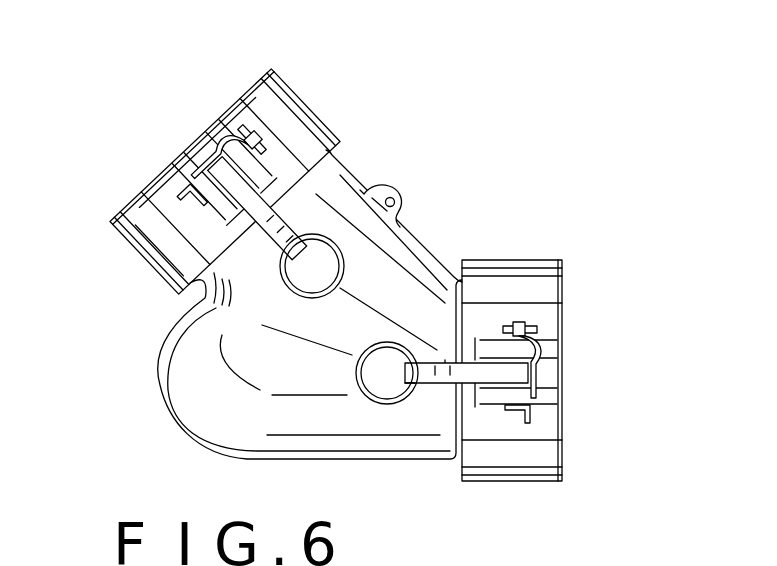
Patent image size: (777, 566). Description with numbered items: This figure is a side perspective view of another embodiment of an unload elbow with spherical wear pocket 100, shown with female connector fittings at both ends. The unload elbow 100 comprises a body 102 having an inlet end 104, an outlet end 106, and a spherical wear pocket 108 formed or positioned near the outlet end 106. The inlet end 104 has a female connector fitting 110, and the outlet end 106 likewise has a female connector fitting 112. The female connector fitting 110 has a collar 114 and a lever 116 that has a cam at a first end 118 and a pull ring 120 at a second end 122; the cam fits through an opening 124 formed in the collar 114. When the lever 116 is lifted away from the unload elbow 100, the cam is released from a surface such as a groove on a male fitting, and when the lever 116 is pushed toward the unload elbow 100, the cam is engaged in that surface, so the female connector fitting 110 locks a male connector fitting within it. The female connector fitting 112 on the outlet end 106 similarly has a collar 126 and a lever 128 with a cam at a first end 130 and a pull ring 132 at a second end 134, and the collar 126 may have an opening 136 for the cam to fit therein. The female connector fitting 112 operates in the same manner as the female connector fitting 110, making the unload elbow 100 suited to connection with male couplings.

The unload elbow with spherical wear pocket 100 is at (376, 134).
The body 102 is at (414, 232).
The inlet end 104 is at (606, 312).
The outlet end 106 is at (179, 110).
The spherical wear pocket 108 is at (166, 407).
The female connector fitting 110 is at (527, 260).
The female connector fitting 112 is at (303, 100).
The collar 114 is at (533, 450).
The lever 116 is at (444, 370).
The first end 118 is at (513, 373).
The pull ring 120 is at (353, 372).
The second end 122 is at (411, 385).
The opening 124 is at (537, 366).
The collar 126 is at (145, 212).
The lever 128 is at (340, 165).
The first end 130 is at (250, 148).
The pull ring 132 is at (307, 297).
The second end 134 is at (277, 253).
The opening 136 is at (190, 145).